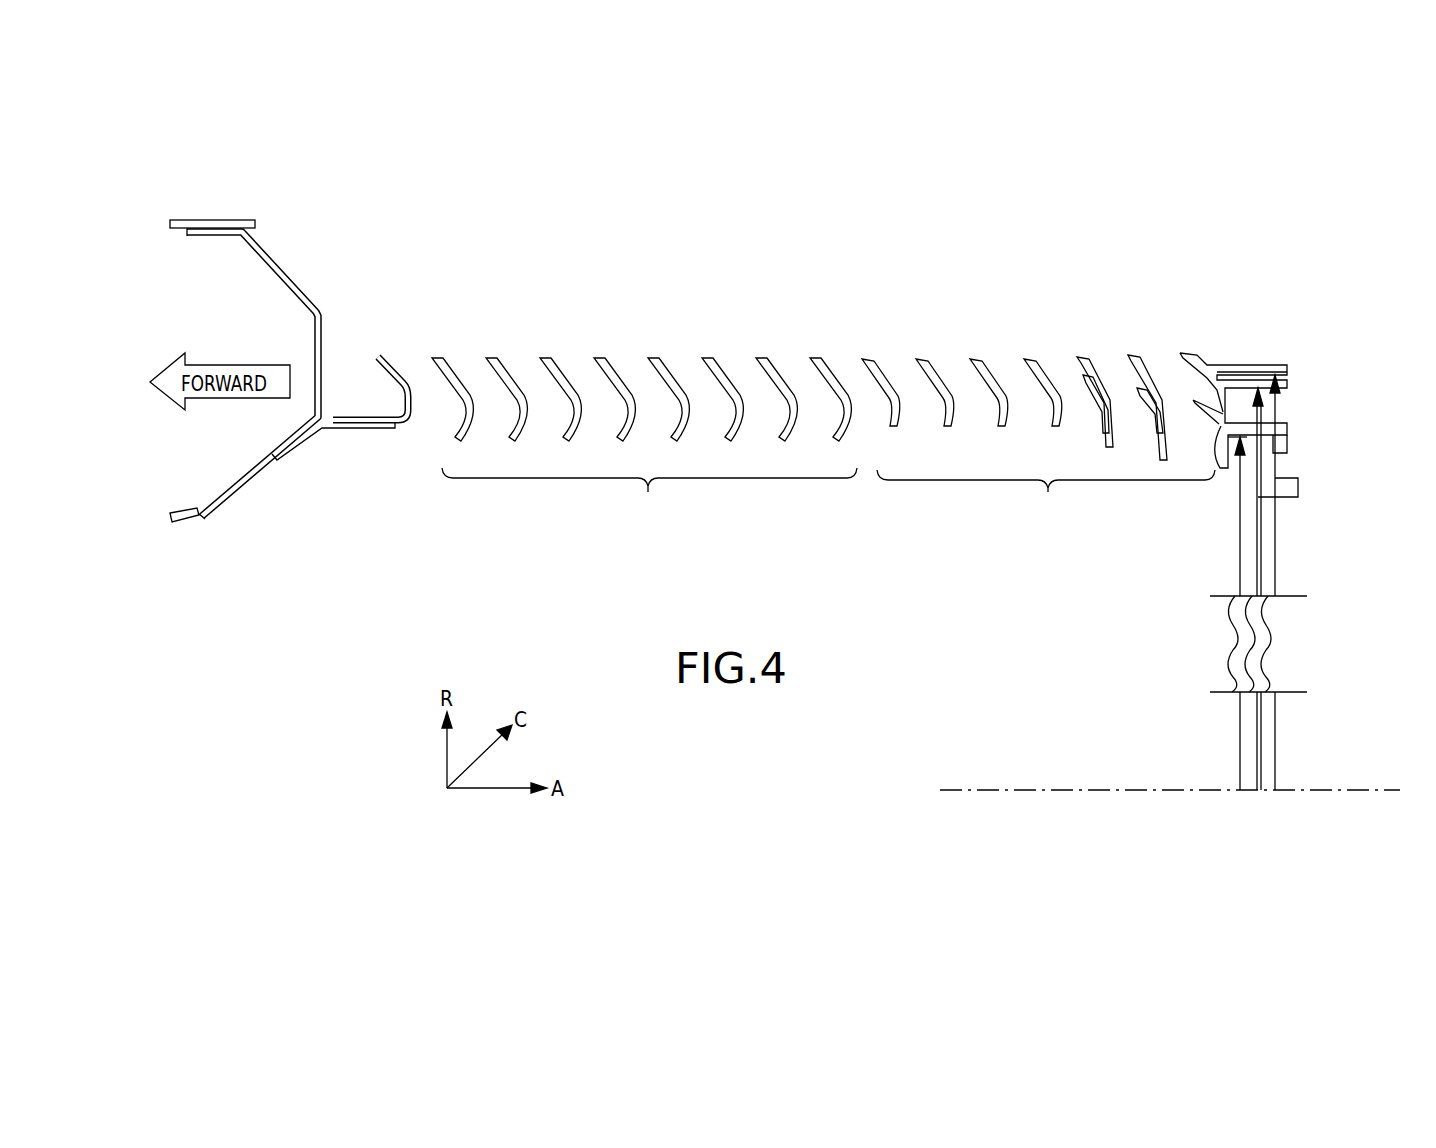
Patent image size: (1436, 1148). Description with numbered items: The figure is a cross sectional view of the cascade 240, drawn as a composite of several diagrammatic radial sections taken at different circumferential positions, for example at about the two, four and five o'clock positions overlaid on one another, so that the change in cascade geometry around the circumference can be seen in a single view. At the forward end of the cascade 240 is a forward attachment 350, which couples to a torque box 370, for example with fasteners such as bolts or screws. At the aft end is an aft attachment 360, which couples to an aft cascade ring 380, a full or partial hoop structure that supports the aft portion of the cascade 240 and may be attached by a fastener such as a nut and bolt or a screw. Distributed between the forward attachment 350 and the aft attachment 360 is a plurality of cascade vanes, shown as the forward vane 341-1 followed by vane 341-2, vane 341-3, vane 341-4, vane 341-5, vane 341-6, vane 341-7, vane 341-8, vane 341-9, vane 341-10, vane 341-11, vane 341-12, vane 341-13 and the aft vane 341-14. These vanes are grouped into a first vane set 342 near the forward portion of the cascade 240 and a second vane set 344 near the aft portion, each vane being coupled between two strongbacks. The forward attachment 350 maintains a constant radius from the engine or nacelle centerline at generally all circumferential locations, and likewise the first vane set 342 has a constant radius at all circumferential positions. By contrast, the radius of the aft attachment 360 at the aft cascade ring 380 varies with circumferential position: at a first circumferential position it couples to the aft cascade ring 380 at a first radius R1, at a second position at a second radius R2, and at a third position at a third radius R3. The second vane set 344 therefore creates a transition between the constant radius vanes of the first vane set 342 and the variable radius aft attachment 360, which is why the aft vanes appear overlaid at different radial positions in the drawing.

The cascade 240 is at (836, 270).
The vane 341-1 is at (445, 357).
The vane 341-2 is at (497, 360).
The vane 341-3 is at (551, 357).
The vane 341-4 is at (603, 360).
The vane 341-5 is at (658, 357).
The vane 341-6 is at (712, 360).
The vane 341-7 is at (766, 357).
The vane 341-8 is at (822, 360).
The vane 341-9 is at (875, 358).
The vane 341-10 is at (931, 360).
The vane 341-11 is at (983, 357).
The vane 341-12 is at (1041, 360).
The vane 341-13 is at (1091, 357).
The vane 341-14 is at (1149, 355).
The first vane set 342 is at (649, 495).
The second vane set 344 is at (1046, 497).
The forward attachment 350 is at (388, 360).
The aft attachment 360 is at (1205, 357).
The torque box 370 is at (350, 430).
The aft cascade ring 380 is at (1298, 487).
The first radius R1 is at (1237, 512).
The second radius R2 is at (1255, 545).
The third radius R3 is at (1278, 528).